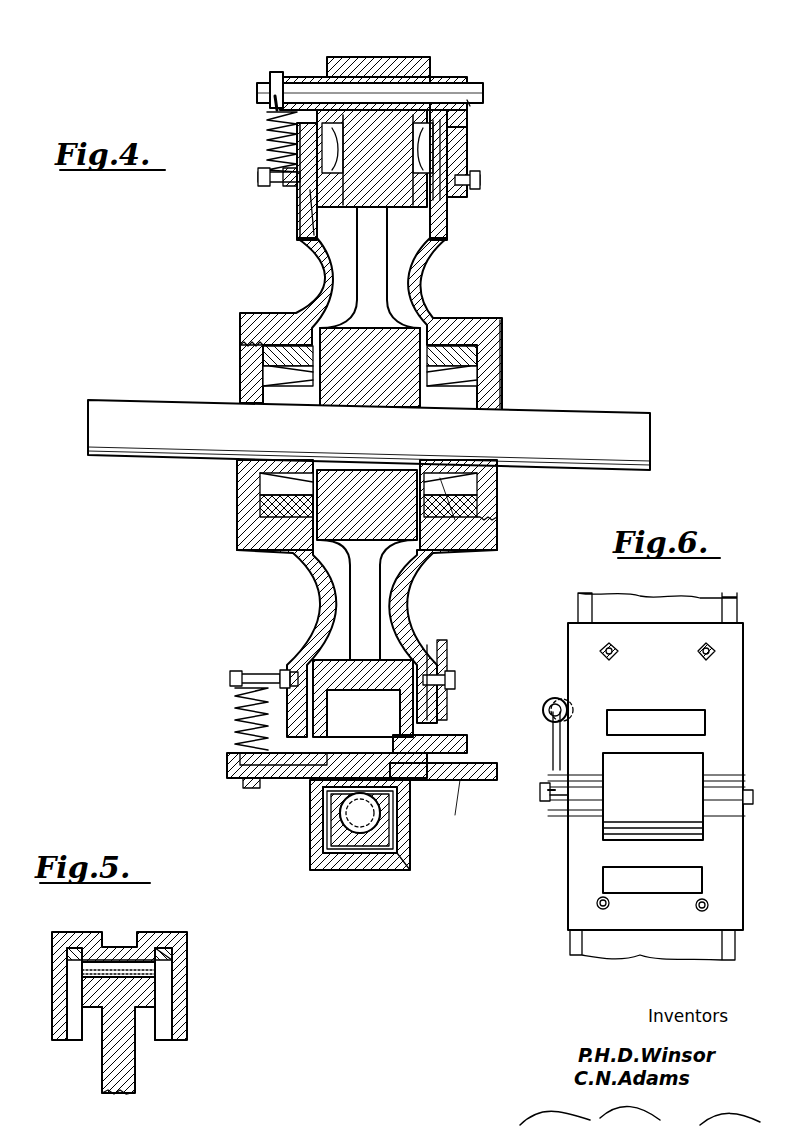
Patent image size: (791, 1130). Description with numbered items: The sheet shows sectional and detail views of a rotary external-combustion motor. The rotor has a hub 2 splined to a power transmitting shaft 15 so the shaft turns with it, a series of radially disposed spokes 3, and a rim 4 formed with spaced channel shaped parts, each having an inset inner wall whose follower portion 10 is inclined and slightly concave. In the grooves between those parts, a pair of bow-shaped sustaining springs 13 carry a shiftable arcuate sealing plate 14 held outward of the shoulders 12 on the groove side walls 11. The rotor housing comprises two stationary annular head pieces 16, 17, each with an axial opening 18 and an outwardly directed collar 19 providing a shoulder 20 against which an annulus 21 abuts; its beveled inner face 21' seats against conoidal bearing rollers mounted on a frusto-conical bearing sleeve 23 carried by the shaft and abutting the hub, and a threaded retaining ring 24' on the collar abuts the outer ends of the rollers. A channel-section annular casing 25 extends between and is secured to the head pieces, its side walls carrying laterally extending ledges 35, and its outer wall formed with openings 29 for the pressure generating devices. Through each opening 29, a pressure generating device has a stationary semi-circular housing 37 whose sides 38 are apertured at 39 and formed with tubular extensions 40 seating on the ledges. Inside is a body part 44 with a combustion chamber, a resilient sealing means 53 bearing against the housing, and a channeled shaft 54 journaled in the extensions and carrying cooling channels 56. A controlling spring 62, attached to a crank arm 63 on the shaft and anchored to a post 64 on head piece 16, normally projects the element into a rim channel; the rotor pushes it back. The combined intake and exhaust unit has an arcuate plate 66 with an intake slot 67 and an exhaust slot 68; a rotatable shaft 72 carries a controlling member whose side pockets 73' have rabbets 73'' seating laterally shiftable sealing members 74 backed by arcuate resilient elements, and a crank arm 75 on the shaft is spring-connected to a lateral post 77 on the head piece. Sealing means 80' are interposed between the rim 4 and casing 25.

In FIG. 4, the hub 2 is at (400, 348).
In FIG. 5, the spokes 3 is at (125, 1075).
In FIG. 5, the rim 4 is at (100, 1015).
In FIG. 4, the follower portion 10 is at (340, 57).
In FIG. 6, the follower portion 10 is at (628, 768).
In FIG. 4, the side walls of groove 11 is at (300, 77).
In FIG. 6, the side walls of groove 11 is at (586, 805).
In FIG. 4, the shoulders 12 is at (355, 57).
In FIG. 4, the bow-shaped sustaining springs 13 is at (392, 110).
In FIG. 5, the bow-shaped sustaining springs 13 is at (96, 962).
In FIG. 5, the sealing plate 14 is at (125, 930).
In FIG. 4, the power transmitting shaft 15 is at (550, 425).
In FIG. 6, the head piece 16 is at (553, 700).
In FIG. 4, the head piece 17 is at (437, 255).
In FIG. 4, the axial opening 18 is at (490, 320).
In FIG. 4, the collar 19 is at (262, 328).
In FIG. 4, the shoulder 20 is at (275, 355).
In FIG. 4, the annulus 21 is at (257, 377).
In FIG. 4, the beveled inner face 21' is at (502, 366).
In FIG. 4, the bearing sleeve 23 is at (462, 520).
In FIG. 4, the thread 24' is at (525, 512).
In FIG. 5, the casing 25 is at (187, 955).
In FIG. 4, the openings 29 is at (285, 700).
In FIG. 4, the ledges 35 is at (465, 118).
In FIG. 4, the housing 37 is at (370, 870).
In FIG. 4, the sides of housing 38 is at (470, 768).
In FIG. 4, the apertures 39 is at (445, 735).
In FIG. 4, the tubular extensions 40 is at (450, 753).
In FIG. 4, the body part 44 is at (337, 840).
In FIG. 4, the resilient sealing means 53 is at (405, 865).
In FIG. 4, the channeled shaft 54 is at (323, 790).
In FIG. 4, the channels 56 is at (458, 790).
In FIG. 4, the controlling spring 62 is at (240, 710).
In FIG. 4, the crank arm 63 is at (250, 788).
In FIG. 4, the post 64 is at (233, 672).
In FIG. 6, the plate 66 is at (572, 905).
In FIG. 6, the slot 67 is at (608, 880).
In FIG. 6, the slot 68 is at (653, 712).
In FIG. 6, the rotatable shaft 72 is at (552, 794).
In FIG. 4, the pockets 73' is at (473, 160).
In FIG. 4, the rabbets 73'' is at (402, 109).
In FIG. 4, the sealing members 74 is at (247, 186).
In FIG. 4, the crank arm 75 is at (272, 82).
In FIG. 6, the crank arm 75 is at (555, 805).
In FIG. 4, the post 77 is at (258, 177).
In FIG. 4, the sealing means 80' is at (363, 698).